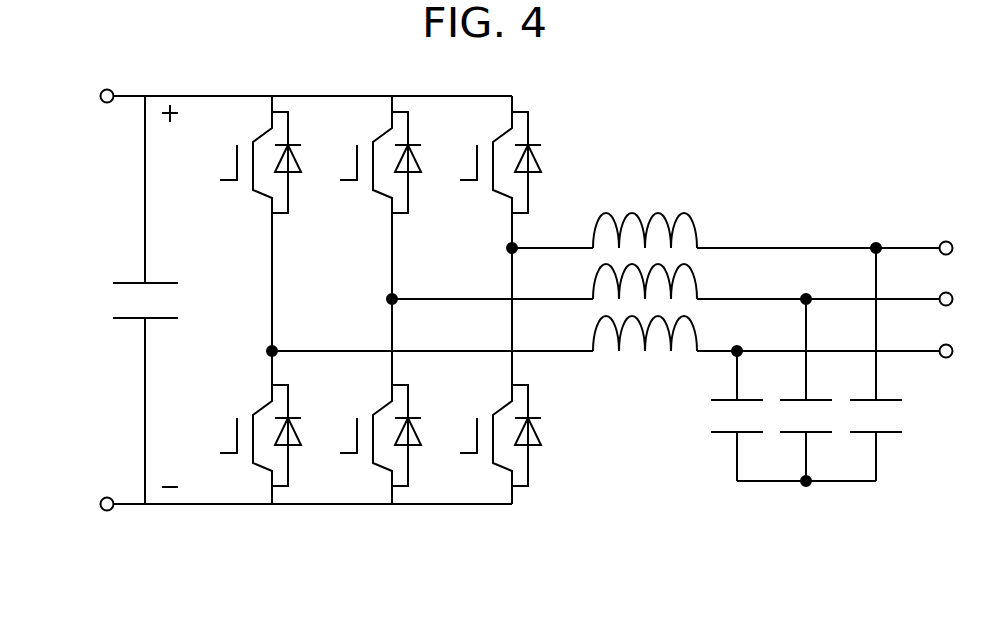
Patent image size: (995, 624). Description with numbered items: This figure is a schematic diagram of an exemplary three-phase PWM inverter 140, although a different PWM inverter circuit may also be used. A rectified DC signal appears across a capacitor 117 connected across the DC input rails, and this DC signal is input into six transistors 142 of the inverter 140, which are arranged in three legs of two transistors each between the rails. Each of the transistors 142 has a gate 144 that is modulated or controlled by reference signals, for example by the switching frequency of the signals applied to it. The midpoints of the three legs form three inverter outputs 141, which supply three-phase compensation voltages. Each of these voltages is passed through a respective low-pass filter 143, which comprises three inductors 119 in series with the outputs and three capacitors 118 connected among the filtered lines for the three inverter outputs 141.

The three-phase PWM inverter 140 is at (747, 88).
The capacitor 117 is at (92, 298).
The transistors 142 is at (245, 457).
The gate 144 is at (232, 165).
The inverter outputs 141 is at (512, 248).
The inductors 119 is at (692, 215).
The capacitors 118 is at (732, 437).
The low-pass filter 143 is at (913, 420).